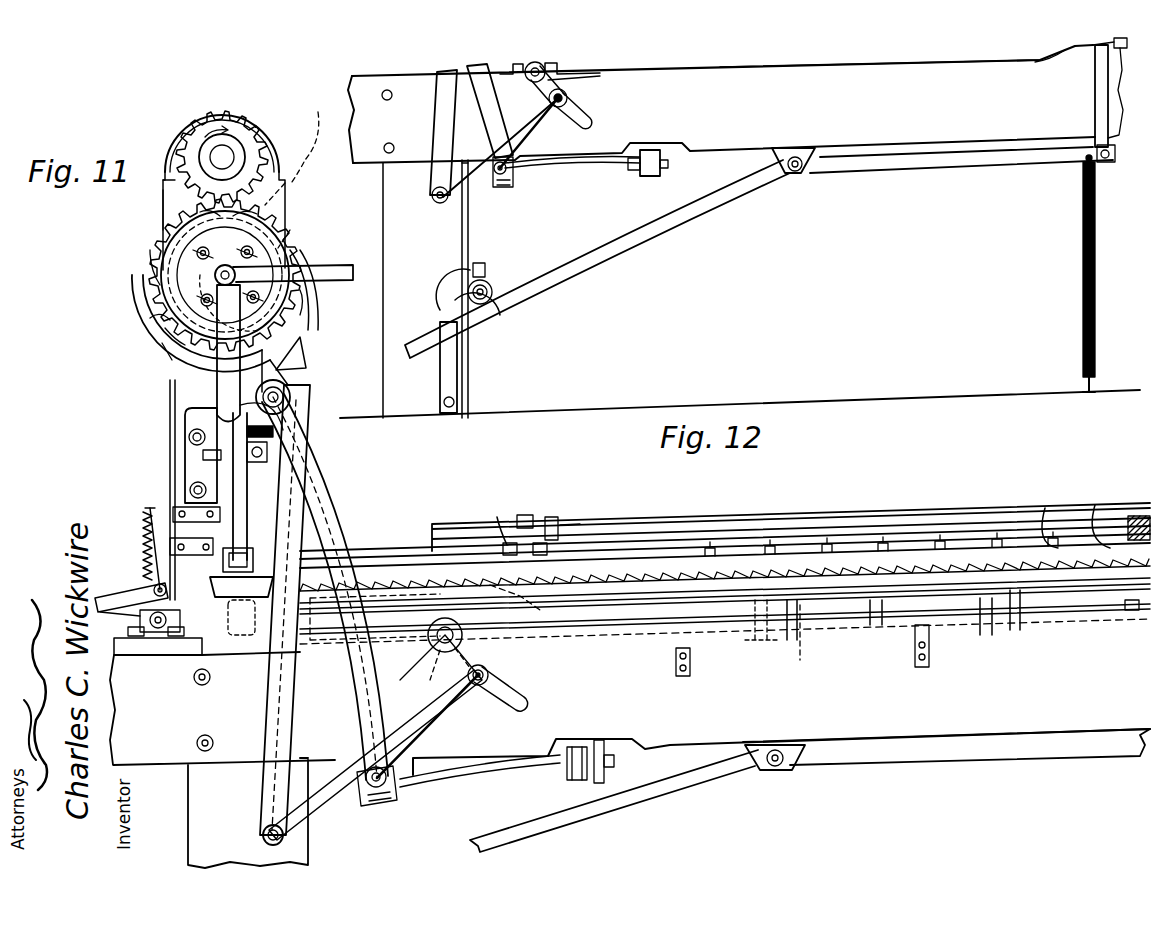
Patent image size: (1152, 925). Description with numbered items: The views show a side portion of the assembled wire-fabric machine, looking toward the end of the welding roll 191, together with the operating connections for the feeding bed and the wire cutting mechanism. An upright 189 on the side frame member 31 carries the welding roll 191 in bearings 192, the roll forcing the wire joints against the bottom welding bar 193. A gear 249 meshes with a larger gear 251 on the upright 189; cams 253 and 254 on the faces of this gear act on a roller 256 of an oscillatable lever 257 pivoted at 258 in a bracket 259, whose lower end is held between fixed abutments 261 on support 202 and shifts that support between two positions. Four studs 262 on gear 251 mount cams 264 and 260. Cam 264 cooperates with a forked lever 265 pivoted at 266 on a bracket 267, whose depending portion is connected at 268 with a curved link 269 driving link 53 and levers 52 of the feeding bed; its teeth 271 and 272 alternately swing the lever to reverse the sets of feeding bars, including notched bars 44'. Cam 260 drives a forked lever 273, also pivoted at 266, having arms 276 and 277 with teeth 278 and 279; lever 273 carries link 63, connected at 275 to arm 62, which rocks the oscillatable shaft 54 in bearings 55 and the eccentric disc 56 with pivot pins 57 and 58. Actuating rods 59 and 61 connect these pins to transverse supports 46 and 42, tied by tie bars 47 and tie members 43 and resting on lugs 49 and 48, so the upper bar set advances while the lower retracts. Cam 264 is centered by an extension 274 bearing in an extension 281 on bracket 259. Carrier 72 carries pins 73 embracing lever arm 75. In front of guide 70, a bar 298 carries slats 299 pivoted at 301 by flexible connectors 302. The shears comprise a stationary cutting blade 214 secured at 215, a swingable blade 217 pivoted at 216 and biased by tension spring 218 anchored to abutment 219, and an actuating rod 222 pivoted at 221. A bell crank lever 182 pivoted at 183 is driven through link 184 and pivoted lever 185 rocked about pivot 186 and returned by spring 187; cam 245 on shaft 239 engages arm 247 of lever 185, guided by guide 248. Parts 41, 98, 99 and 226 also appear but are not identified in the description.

In FIG. 11, the side frame member 31 is at (905, 150).
In FIG. 12, the side frame member 31 is at (725, 737).
In FIG. 11, the frame 41 is at (465, 236).
In FIG. 12, the transverse feeding bar support 42 is at (752, 645).
In FIG. 12, the longitudinal tie member 43 is at (950, 600).
In FIG. 12, the notched bars 44' is at (869, 627).
In FIG. 12, the transverse support 46 is at (800, 645).
In FIG. 12, the tie bar 47 is at (1078, 590).
In FIG. 12, the lug 48 is at (742, 660).
In FIG. 12, the lug 49 is at (801, 651).
In FIG. 11, the lever 52 is at (655, 148).
In FIG. 12, the lever 52 is at (606, 750).
In FIG. 12, the link 53 is at (572, 782).
In FIG. 11, the oscillatable shaft 54 is at (565, 82).
In FIG. 12, the oscillatable shaft 54 is at (438, 649).
In FIG. 11, the bearing 55 is at (608, 76).
In FIG. 12, the bearing 55 is at (480, 610).
In FIG. 12, the eccentric disc 56 is at (392, 565).
In FIG. 12, the pivot pin 57 is at (445, 600).
In FIG. 12, the pivot pin 58 is at (372, 757).
In FIG. 12, the actuating rod 59 is at (375, 606).
In FIG. 12, the actuating rod 61 is at (500, 650).
In FIG. 11, the lever 62 is at (588, 122).
In FIG. 12, the lever 62 is at (524, 705).
In FIG. 11, the link 63 is at (532, 120).
In FIG. 12, the link 63 is at (436, 720).
In FIG. 12, the guide 70 is at (410, 550).
In FIG. 12, the carrier 72 is at (570, 527).
In FIG. 12, the pin 73 is at (525, 514).
In FIG. 12, the lever arm 75 is at (660, 524).
In FIG. 12, the rod 98 is at (500, 530).
In FIG. 12, the post 99 is at (555, 516).
In FIG. 11, the bell crank lever 182 is at (1045, 60).
In FIG. 11, the pivot 183 is at (1112, 45).
In FIG. 11, the link 184 is at (1095, 108).
In FIG. 11, the pivoted lever 185 is at (993, 170).
In FIG. 12, the pivoted lever 185 is at (943, 758).
In FIG. 11, the pivot 186 is at (797, 176).
In FIG. 12, the pivot 186 is at (778, 770).
In FIG. 11, the spring 187 is at (1081, 278).
In FIG. 11, the upright 189 is at (466, 214).
In FIG. 11, the welding roll 191 is at (185, 122).
In FIG. 11, the bearing 192 is at (268, 160).
In FIG. 11, the bottom welding bar 193 is at (240, 652).
In FIG. 11, the support 202 is at (222, 572).
In FIG. 11, the stationary cutting blade 214 is at (118, 597).
In FIG. 11, the securing point 215 is at (172, 615).
In FIG. 11, the pivot 216 is at (113, 665).
In FIG. 11, the swingable cutting blade 217 is at (140, 582).
In FIG. 11, the tension spring 218 is at (140, 562).
In FIG. 11, the stationary abutment 219 is at (192, 515).
In FIG. 11, the pivot 221 is at (168, 588).
In FIG. 11, the actuating rod 222 is at (170, 466).
In FIG. 11, the rod 226 is at (215, 545).
In FIG. 11, the shaft 239 is at (500, 306).
In FIG. 11, the cam 245 is at (466, 296).
In FIG. 11, the arm 247 is at (572, 262).
In FIG. 12, the arm 247 is at (655, 808).
In FIG. 11, the guide 248 is at (458, 374).
In FIG. 11, the gear 249 is at (220, 118).
In FIG. 11, the larger gear 251 is at (282, 178).
In FIG. 11, the cam 253 is at (160, 207).
In FIG. 11, the cam 254 is at (310, 147).
In FIG. 11, the roller 256 is at (178, 372).
In FIG. 11, the oscillatable lever 257 is at (235, 475).
In FIG. 11, the pivot 258 is at (200, 455).
In FIG. 11, the bracket 259 is at (190, 494).
In FIG. 11, the cam 260 is at (178, 191).
In FIG. 11, the fixed abutment 261 is at (238, 575).
In FIG. 11, the stud 262 is at (330, 326).
In FIG. 11, the cam 264 is at (165, 280).
In FIG. 11, the forked lever 265 is at (482, 110).
In FIG. 11, the pivot 266 is at (290, 392).
In FIG. 11, the bracket 267 is at (300, 432).
In FIG. 11, the pivot connection 268 is at (515, 175).
In FIG. 12, the pivot connection 268 is at (400, 790).
In FIG. 11, the curved link 269 is at (605, 168).
In FIG. 12, the curved link 269 is at (488, 770).
In FIG. 11, the tooth 271 is at (180, 338).
In FIG. 11, the tooth 272 is at (322, 255).
In FIG. 11, the forked lever 273 is at (438, 118).
In FIG. 11, the extension 274 is at (205, 268).
In FIG. 11, the pivot 275 is at (563, 107).
In FIG. 12, the pivot 275 is at (480, 686).
In FIG. 11, the arm 276 is at (160, 355).
In FIG. 11, the arm 277 is at (326, 282).
In FIG. 11, the tooth 278 is at (160, 295).
In FIG. 11, the tooth 279 is at (282, 230).
In FIG. 11, the extension 281 is at (160, 262).
In FIG. 12, the bar 298 is at (780, 545).
In FIG. 12, the rod or slat 299 is at (940, 555).
In FIG. 12, the pivotal connection 301 is at (1041, 511).
In FIG. 12, the flexible connector 302 is at (1116, 511).